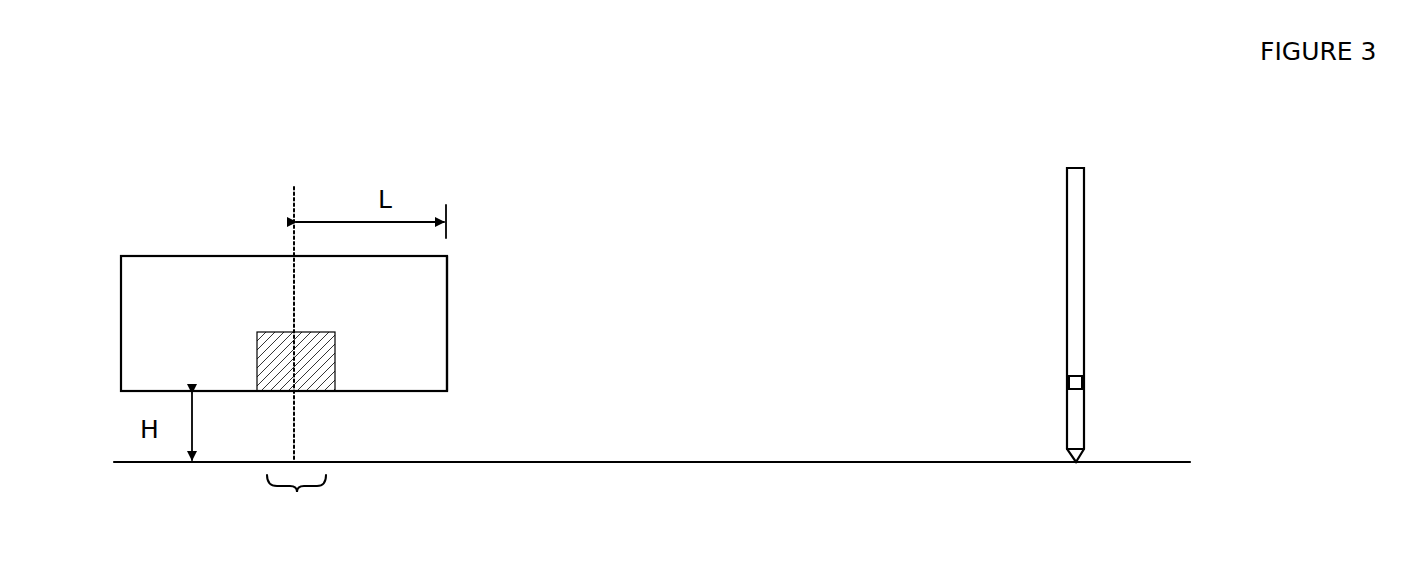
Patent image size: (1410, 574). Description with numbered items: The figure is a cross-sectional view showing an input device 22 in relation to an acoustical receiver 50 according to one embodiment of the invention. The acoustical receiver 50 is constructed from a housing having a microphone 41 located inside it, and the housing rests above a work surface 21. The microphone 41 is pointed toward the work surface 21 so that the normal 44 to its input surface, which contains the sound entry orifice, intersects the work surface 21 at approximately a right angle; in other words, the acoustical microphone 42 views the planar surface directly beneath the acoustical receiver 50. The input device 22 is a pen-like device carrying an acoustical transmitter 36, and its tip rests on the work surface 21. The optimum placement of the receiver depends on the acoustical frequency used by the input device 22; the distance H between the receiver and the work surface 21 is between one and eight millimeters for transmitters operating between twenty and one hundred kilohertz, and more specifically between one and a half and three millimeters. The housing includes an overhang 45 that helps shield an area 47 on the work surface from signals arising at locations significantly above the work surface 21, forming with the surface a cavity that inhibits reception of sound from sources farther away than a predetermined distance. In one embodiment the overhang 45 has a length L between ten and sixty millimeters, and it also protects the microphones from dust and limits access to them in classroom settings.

The work surface 21 is at (773, 463).
The input device 22 is at (1073, 266).
The acoustical transmitter 36 is at (1074, 383).
The microphone 41 is at (311, 330).
The acoustical microphone 42 is at (426, 378).
The normal 44 is at (293, 427).
The overhang 45 is at (436, 310).
The area 47 is at (296, 504).
The acoustical receiver 50 is at (240, 263).